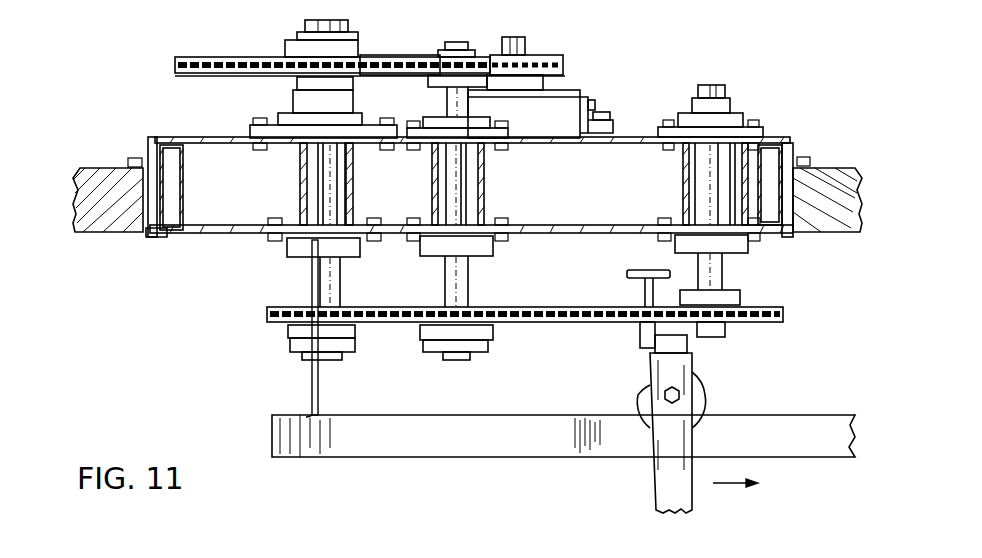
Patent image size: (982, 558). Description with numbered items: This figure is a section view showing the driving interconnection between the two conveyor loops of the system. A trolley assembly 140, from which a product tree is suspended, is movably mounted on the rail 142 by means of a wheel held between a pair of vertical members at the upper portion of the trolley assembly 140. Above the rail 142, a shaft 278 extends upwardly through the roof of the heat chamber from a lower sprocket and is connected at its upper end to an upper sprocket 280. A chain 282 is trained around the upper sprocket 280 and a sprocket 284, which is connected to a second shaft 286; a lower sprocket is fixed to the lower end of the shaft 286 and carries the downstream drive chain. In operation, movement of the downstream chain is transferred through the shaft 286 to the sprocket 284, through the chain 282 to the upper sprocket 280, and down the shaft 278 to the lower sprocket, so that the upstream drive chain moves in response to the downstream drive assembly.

The trolley assembly 140 is at (640, 484).
The rail 142 is at (468, 458).
The shaft 278 is at (341, 277).
The upper sprocket 280 is at (221, 55).
The chain 282 is at (387, 55).
The sprocket 284 is at (485, 53).
The shaft 286 is at (468, 190).